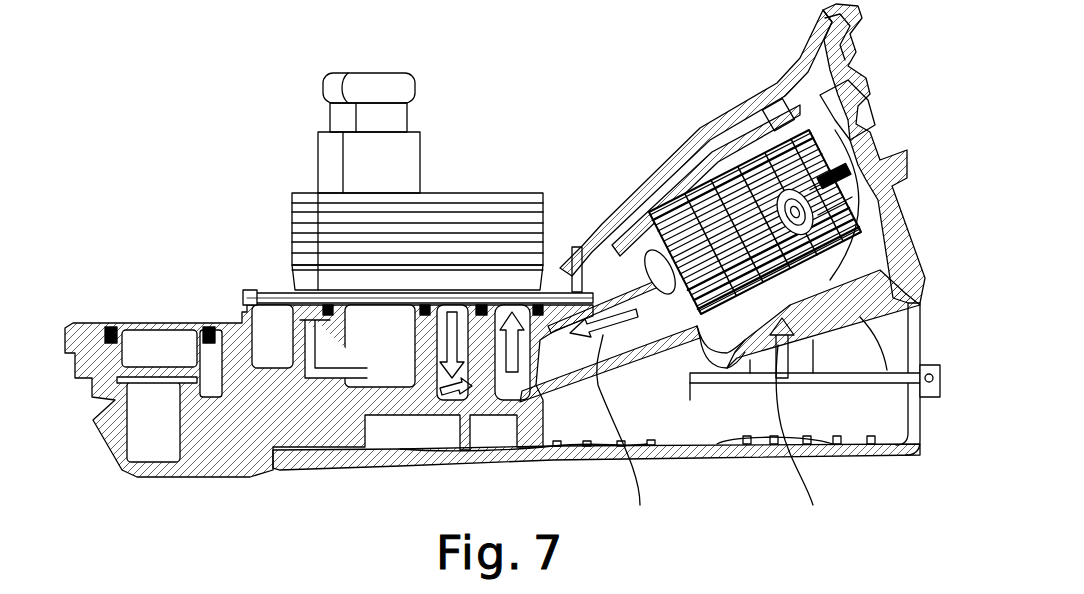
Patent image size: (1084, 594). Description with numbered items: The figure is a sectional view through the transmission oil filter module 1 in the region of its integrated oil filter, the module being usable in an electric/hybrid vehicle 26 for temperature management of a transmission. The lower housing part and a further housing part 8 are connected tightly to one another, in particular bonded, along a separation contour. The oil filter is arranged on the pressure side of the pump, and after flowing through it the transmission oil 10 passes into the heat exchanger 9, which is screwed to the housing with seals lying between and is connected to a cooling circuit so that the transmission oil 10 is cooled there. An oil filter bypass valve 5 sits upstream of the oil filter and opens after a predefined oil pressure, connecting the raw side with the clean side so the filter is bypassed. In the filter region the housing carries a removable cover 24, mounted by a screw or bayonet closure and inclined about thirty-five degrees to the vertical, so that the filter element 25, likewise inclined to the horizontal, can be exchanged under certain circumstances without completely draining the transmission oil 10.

The transmission oil filter module 1 is at (215, 200).
The oil filter bypass valve 5 is at (823, 215).
The further housing part 8 is at (623, 203).
The heat exchanger 9 is at (478, 215).
The transmission oil 10 is at (712, 427).
The removable cover 24 is at (863, 113).
The filter element 25 is at (736, 162).
The electric/hybrid vehicle 26 is at (568, 52).